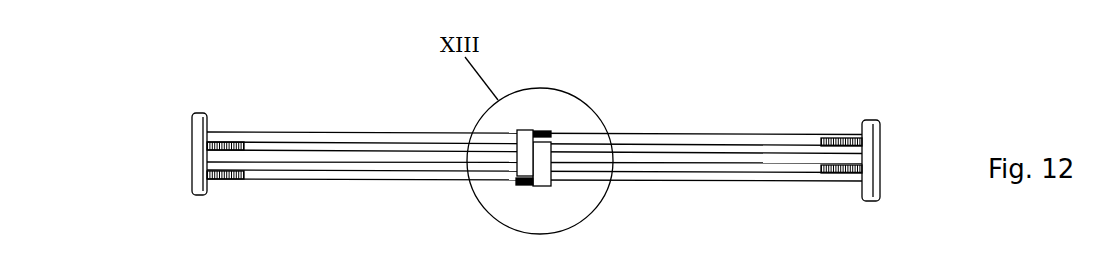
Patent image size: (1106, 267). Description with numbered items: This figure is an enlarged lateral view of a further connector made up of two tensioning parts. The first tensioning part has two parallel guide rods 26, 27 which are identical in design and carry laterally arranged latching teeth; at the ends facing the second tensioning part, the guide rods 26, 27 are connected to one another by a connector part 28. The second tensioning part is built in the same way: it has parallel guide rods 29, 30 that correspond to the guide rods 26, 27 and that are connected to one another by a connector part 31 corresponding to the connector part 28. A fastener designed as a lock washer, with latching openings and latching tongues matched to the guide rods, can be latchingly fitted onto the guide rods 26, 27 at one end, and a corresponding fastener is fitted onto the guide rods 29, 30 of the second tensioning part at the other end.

The guide rod 26 is at (348, 139).
The guide rod 27 is at (350, 167).
The connector part 28 is at (543, 168).
The guide rod 29 is at (748, 143).
The guide rod 30 is at (732, 180).
The connector part 31 is at (523, 158).